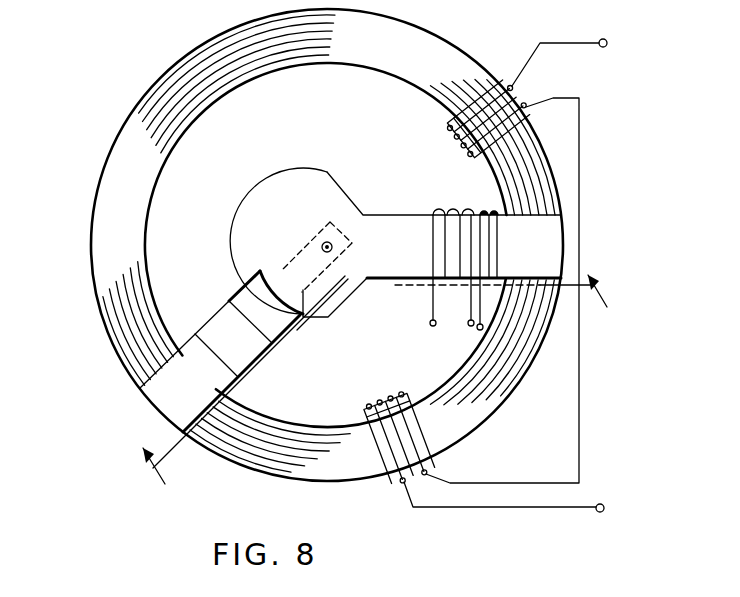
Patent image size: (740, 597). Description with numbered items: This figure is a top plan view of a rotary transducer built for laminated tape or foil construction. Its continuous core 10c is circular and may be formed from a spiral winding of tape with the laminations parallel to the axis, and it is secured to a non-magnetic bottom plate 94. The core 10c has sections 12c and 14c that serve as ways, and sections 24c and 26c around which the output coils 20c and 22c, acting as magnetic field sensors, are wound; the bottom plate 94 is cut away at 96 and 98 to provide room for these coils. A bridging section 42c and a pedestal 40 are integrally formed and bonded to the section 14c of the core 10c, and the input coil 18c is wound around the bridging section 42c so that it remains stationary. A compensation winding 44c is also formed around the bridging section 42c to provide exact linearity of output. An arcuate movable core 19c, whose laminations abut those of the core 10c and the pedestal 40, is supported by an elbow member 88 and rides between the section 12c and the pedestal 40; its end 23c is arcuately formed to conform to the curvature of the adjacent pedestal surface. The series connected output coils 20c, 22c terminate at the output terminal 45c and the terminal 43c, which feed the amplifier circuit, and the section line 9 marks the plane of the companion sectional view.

The core 10c is at (92, 294).
The section of the core 12c is at (100, 219).
The section of the core 14c is at (545, 197).
The input coil 18c is at (449, 212).
The movable core 19c is at (191, 347).
The output coil 20c is at (385, 404).
The output coil 22c is at (446, 124).
The end of the movable core 23c is at (277, 303).
The section of the core 24c is at (358, 473).
The section of the core 26c is at (338, 17).
The pedestal 40 is at (292, 200).
The bridging section 42c is at (420, 234).
The terminal 43c is at (604, 508).
The compensation winding 44c is at (484, 213).
The output terminal 45c is at (607, 41).
The elbow member 88 is at (248, 353).
The bottom plate 94 is at (320, 137).
The cutaway 96 is at (400, 402).
The cutaway 98 is at (452, 135).
The section line 9- 9 is at (382, 388).